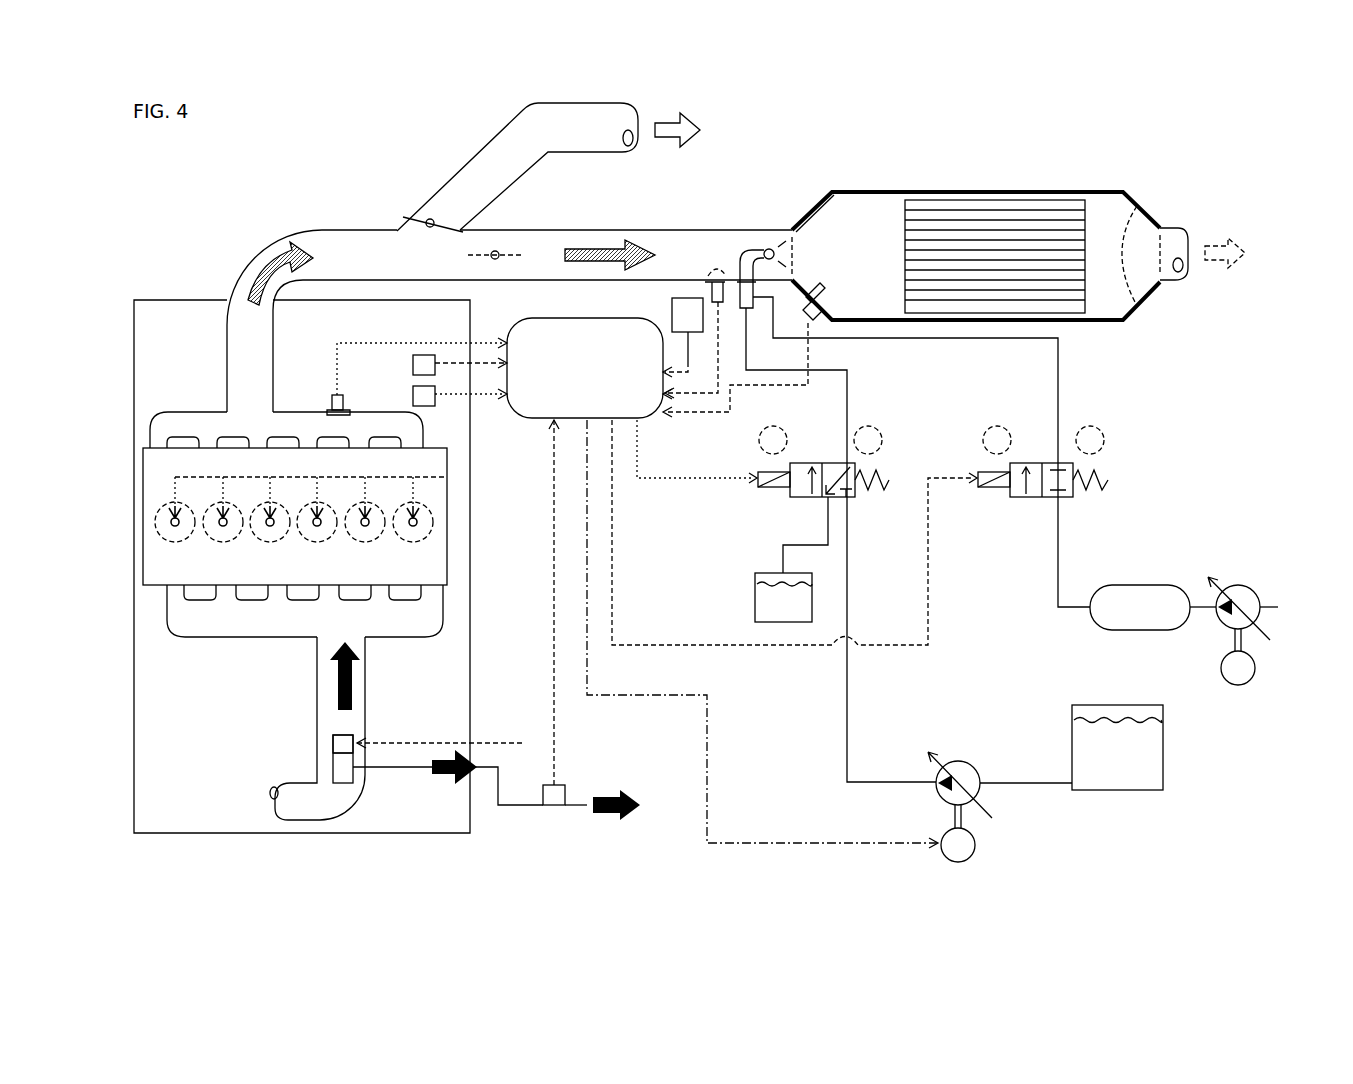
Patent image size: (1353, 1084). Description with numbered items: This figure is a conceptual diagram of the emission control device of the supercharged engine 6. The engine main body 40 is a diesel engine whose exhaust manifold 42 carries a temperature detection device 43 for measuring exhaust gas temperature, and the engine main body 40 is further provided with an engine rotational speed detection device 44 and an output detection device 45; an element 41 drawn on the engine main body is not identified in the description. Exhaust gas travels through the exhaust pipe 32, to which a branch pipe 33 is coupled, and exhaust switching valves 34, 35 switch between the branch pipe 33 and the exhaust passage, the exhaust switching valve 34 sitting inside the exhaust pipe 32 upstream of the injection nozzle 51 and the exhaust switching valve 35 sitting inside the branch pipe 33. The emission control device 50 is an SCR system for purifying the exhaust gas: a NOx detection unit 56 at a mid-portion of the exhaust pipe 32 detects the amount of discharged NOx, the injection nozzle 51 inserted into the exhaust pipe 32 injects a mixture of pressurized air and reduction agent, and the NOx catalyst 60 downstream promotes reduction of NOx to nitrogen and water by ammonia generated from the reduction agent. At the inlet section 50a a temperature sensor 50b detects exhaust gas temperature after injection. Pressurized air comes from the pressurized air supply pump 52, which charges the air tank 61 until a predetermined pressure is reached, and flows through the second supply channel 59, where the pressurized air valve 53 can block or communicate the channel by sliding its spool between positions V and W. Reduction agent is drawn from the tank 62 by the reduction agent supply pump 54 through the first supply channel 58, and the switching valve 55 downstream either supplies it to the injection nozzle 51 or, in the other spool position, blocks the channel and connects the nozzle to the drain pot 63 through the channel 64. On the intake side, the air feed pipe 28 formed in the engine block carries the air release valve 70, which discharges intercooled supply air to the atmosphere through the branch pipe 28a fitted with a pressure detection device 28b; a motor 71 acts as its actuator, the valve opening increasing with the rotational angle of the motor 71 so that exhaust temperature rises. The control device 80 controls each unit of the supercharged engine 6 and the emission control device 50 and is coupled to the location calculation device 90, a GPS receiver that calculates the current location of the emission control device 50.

The supercharged engine 6 is at (224, 154).
The air feed pipe 28 is at (350, 812).
The branch pipe 28a is at (517, 818).
The pressure detection device 28b is at (543, 787).
The exhaust pipe 32 is at (332, 230).
The branch pipe 33 is at (470, 163).
The exhaust switching valve 34 is at (500, 252).
The exhaust switching valve 35 is at (427, 221).
The engine main body 40 is at (370, 833).
The exhaust manifold 41 is at (268, 625).
The exhaust manifold 42 is at (186, 432).
The temperature detection device 43 is at (332, 400).
The engine rotational speed detection device 44 is at (413, 365).
The output detection device 45 is at (413, 396).
The emission control device 50 is at (955, 265).
The inlet section 50a is at (825, 228).
The temperature sensor 50b is at (818, 290).
The injection nozzle 51 is at (760, 247).
The pressurized air supply pump 52 is at (1260, 590).
The pressurized air valve 53 is at (1028, 509).
The reduction agent supply pump 54 is at (958, 760).
The switching valve 55 is at (807, 430).
The NOx detection unit 56 is at (712, 298).
The first supply channel 58 is at (826, 746).
The second supply channel 59 is at (1036, 605).
The NOx catalyst 60 is at (945, 200).
The air tank 61 is at (1138, 630).
The tank 62 is at (1128, 778).
The drain pot 63 is at (790, 615).
The channel 64 is at (825, 514).
The air release valve 70 is at (345, 783).
The motor 71 is at (333, 745).
The control device 80 is at (572, 318).
The location calculation device 90 is at (672, 312).